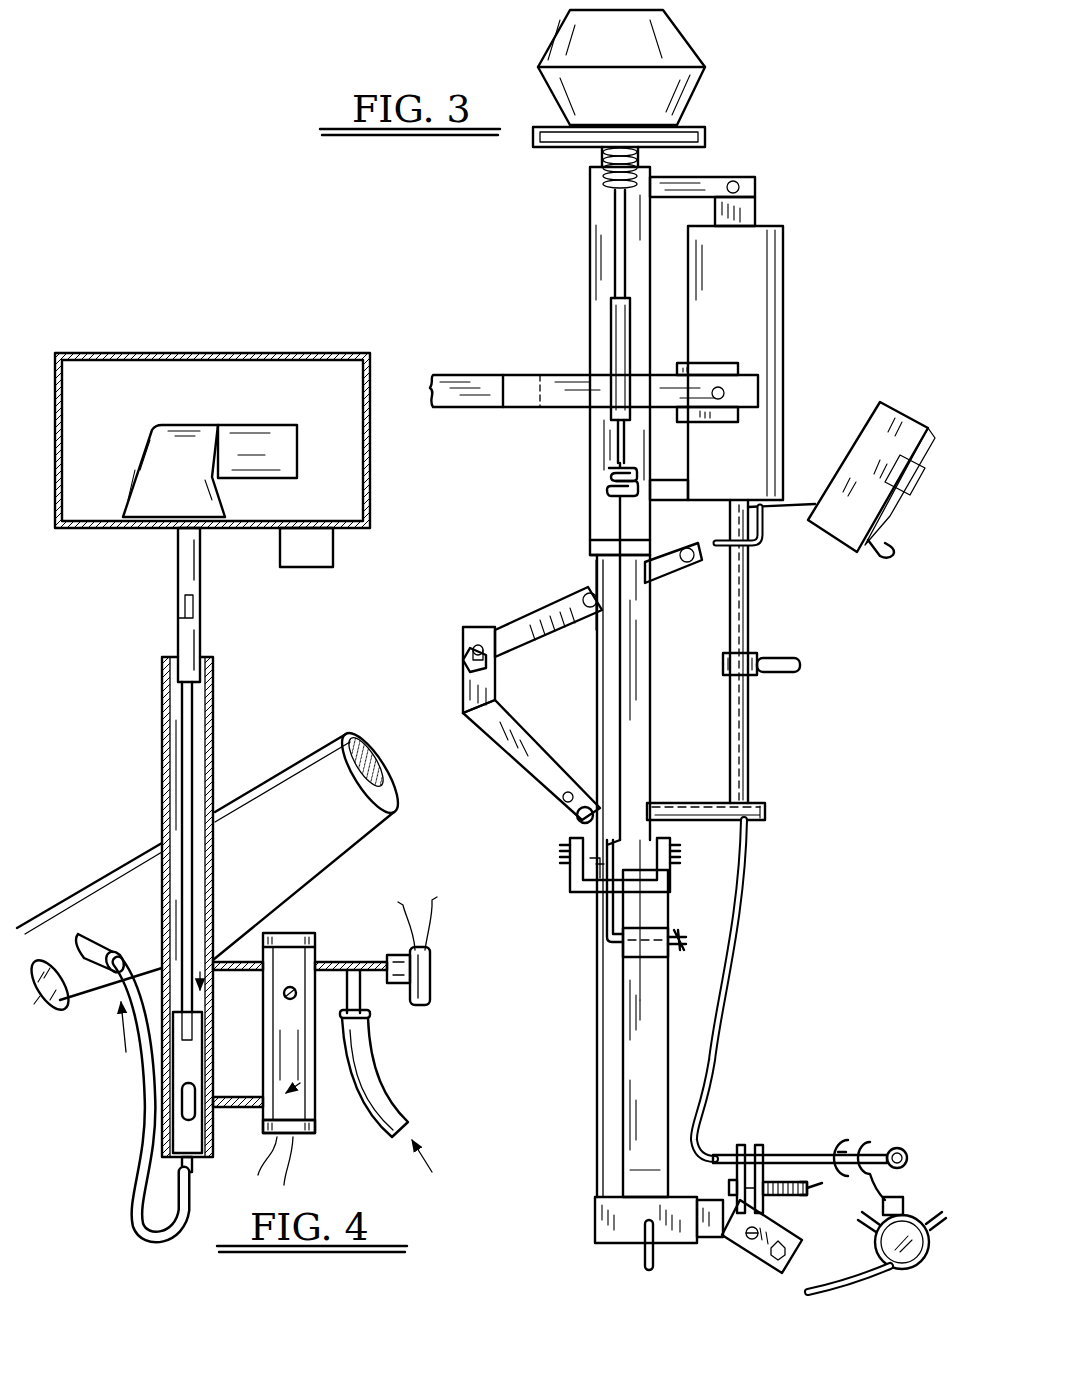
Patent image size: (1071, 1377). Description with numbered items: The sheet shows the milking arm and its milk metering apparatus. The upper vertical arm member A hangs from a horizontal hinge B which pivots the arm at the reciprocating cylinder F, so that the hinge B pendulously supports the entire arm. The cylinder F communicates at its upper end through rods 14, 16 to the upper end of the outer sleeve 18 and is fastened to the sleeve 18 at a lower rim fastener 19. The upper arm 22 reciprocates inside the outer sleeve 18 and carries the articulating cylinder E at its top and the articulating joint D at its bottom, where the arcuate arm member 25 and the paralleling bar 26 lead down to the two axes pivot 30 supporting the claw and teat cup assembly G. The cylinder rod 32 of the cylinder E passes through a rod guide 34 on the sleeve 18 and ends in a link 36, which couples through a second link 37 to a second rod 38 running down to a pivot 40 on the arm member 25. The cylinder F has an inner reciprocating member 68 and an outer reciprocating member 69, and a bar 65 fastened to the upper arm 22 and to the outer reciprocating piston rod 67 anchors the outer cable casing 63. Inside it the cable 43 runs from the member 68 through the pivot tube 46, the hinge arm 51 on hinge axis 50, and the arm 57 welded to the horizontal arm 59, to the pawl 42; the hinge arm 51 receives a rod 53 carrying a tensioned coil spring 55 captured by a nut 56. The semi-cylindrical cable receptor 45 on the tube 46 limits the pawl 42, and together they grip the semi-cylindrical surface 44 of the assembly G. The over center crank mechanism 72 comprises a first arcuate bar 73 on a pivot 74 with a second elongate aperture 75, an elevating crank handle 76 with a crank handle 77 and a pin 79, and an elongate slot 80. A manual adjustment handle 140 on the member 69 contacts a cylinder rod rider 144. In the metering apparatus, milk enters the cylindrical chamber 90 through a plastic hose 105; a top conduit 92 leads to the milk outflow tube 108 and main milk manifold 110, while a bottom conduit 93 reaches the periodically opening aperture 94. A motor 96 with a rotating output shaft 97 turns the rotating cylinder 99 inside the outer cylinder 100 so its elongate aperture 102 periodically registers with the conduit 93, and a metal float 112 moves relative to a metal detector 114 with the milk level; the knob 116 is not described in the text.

In FIG. 3, the articulating cylinder E is at (700, 97).
In FIG. 3, the upper arm 22 is at (645, 152).
In FIG. 3, the rod 16 is at (740, 178).
In FIG. 3, the rod 14 is at (757, 215).
In FIG. 3, the cylinder rod 32 is at (612, 212).
In FIG. 3, the outer sleeve 18 is at (590, 230).
In FIG. 3, the upper vertical arm member A is at (586, 256).
In FIG. 3, the rod guide 34 is at (611, 330).
In FIG. 3, the reciprocating cylinder F is at (747, 307).
In FIG. 3, the horizontal hinge B is at (755, 372).
In FIG. 3, the lower rim fastener 19 is at (662, 480).
In FIG. 3, the link 36 is at (609, 470).
In FIG. 3, the second link 37 is at (607, 496).
In FIG. 3, the second rod 38 is at (600, 536).
In FIG. 3, the cylinder rod rider 144 is at (762, 546).
In FIG. 3, the manual adjustment handle 140 is at (790, 655).
In FIG. 3, the elevating crank handle 76 is at (512, 615).
In FIG. 3, the crank handle 77 is at (673, 580).
In FIG. 3, the pin 79 is at (475, 647).
In FIG. 3, the second elongate aperture 75 is at (478, 668).
In FIG. 3, the over center crank mechanism 72 is at (466, 725).
In FIG. 3, the first arcuate bar 73 is at (522, 770).
In FIG. 3, the elongate slot 80 is at (563, 800).
In FIG. 3, the pivot 74 is at (577, 822).
In FIG. 3, the outer reciprocating piston rod 67 is at (735, 725).
In FIG. 3, the outer reciprocating member 69 is at (750, 722).
In FIG. 3, the bar 65 is at (690, 803).
In FIG. 3, the inner reciprocating member 68 is at (755, 802).
In FIG. 3, the outer cable casing 63 is at (745, 895).
In FIG. 3, the articulating joint D is at (568, 883).
In FIG. 3, the pivot 40 is at (652, 930).
In FIG. 3, the paralleling bar 26 is at (594, 1000).
In FIG. 3, the arcuate arm member 25 is at (668, 998).
In FIG. 3, the two axes pivot 30 is at (597, 1225).
In FIG. 3, the horizontal arm 59 is at (714, 1237).
In FIG. 3, the hinge axis 50 is at (745, 1240).
In FIG. 3, the hinge arm 51 is at (746, 1143).
In FIG. 3, the arm 57 is at (727, 1185).
In FIG. 3, the tensioned coil spring 55 is at (780, 1197).
In FIG. 3, the nut 56 is at (805, 1196).
In FIG. 3, the rod 53 is at (822, 1183).
In FIG. 3, the pivot tube 46 is at (783, 1155).
In FIG. 3, the semi-cylindrical cable receptor 45 is at (846, 1140).
In FIG. 3, the semi-cylindrical surface 44 is at (838, 1150).
In FIG. 3, the cable 43 is at (867, 1142).
In FIG. 3, the pawl 42 is at (906, 1128).
In FIG. 3, the claw and teat cup assembly G is at (915, 1212).
In FIG. 4, the motor 96 is at (188, 425).
In FIG. 4, the rotating output shaft 97 is at (200, 612).
In FIG. 4, the outer cylinder 100 is at (165, 898).
In FIG. 4, the rotating cylinder 99 is at (185, 932).
In FIG. 4, the periodically opening aperture 94 is at (200, 1068).
In FIG. 4, the elongate aperture 102 is at (182, 1100).
In FIG. 4, the milk outflow tube 108 is at (143, 1115).
In FIG. 4, the main milk manifold 110 is at (78, 1000).
In FIG. 4, the top conduit 92 is at (245, 962).
In FIG. 4, the bottom conduit 93 is at (235, 1107).
In FIG. 4, the cylindrical chamber 90 is at (315, 1122).
In FIG. 4, the metal detector 114 is at (300, 1137).
In FIG. 4, the metal float 112 is at (284, 998).
In FIG. 4, the plastic hose 105 is at (400, 1110).
In FIG. 4, the knob 116 is at (432, 970).